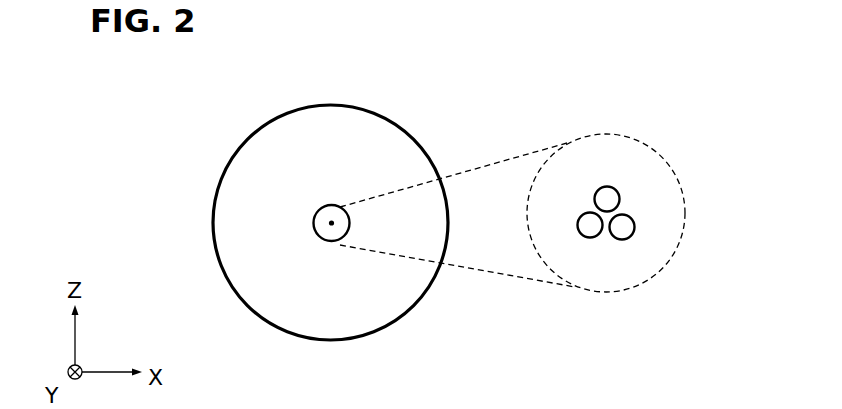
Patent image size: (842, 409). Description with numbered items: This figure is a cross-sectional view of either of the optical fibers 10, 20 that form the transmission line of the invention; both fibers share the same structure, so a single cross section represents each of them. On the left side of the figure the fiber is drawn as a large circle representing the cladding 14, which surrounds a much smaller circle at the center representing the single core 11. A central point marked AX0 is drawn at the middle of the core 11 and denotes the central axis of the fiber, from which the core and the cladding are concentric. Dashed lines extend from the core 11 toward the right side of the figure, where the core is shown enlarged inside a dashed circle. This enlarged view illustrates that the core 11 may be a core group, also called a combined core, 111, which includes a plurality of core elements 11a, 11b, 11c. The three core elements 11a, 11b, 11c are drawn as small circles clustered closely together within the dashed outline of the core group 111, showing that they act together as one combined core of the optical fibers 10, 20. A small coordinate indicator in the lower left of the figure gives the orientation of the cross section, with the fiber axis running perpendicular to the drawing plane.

The optical fiber 10 is at (322, 198).
The optical fiber 20 is at (421, 134).
The cladding 14 is at (232, 220).
The core 11 is at (313, 222).
The central axis AX0 is at (331, 226).
The core group 111 is at (657, 150).
The core element 11a is at (620, 198).
The core element 11b is at (635, 229).
The core element 11c is at (590, 237).